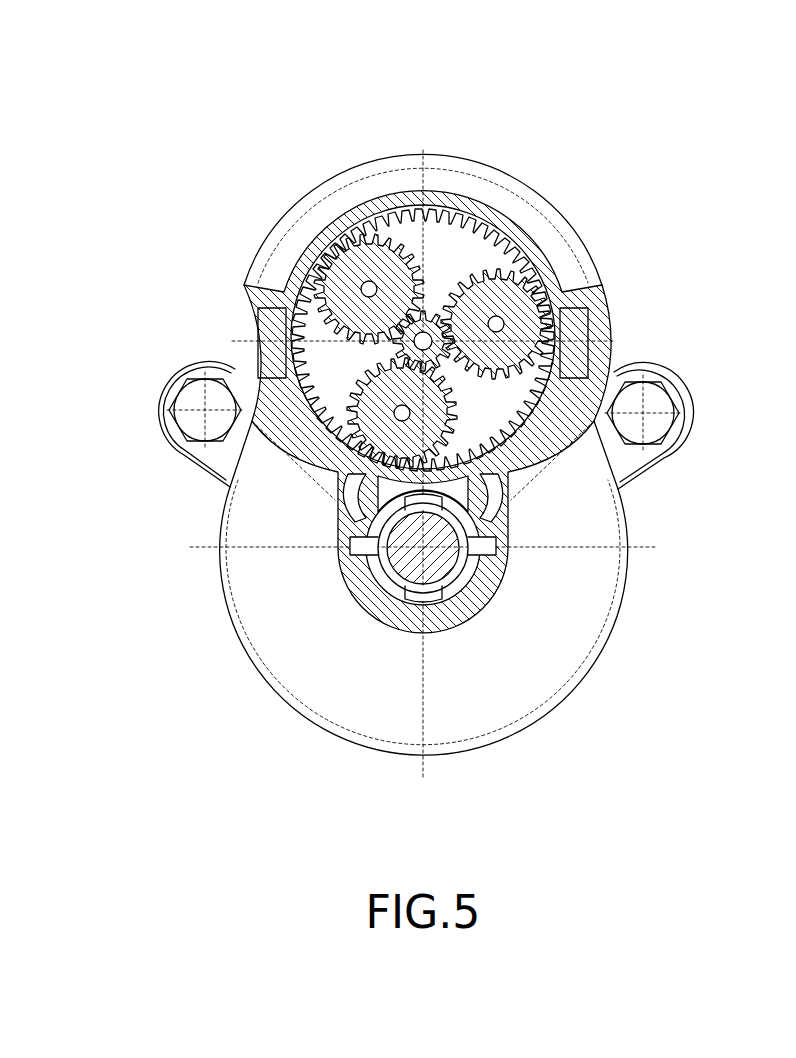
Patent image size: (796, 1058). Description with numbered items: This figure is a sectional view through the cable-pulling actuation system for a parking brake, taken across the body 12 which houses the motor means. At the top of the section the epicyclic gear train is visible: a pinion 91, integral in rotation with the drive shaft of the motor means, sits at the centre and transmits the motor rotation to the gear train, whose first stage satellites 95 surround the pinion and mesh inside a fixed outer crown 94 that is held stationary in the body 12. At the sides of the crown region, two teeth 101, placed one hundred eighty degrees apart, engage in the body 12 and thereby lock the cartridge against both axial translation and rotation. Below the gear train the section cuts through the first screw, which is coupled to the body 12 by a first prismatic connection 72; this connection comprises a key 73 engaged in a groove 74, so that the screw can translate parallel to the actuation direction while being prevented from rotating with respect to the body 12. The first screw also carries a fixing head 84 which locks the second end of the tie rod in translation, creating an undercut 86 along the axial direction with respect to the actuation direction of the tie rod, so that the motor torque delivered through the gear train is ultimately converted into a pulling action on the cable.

The body 12 is at (553, 215).
The pinion 91 is at (421, 213).
The fixed outer crown 94 is at (457, 210).
The first stage satellites 95 is at (350, 233).
The teeth 101 is at (233, 333).
The first prismatic connection 72 is at (352, 664).
The key 73 is at (423, 548).
The groove 74 is at (367, 673).
The fixing head 84 is at (455, 577).
The undercut 86 is at (400, 567).